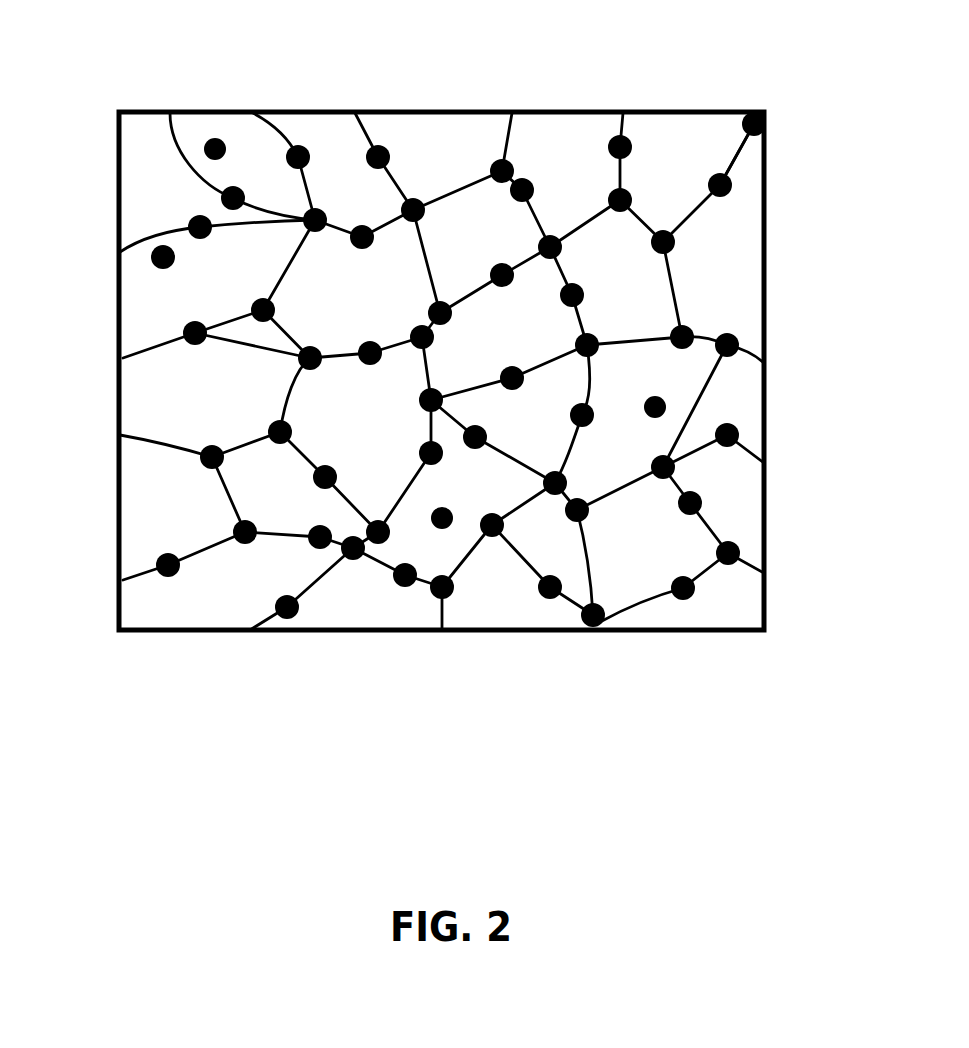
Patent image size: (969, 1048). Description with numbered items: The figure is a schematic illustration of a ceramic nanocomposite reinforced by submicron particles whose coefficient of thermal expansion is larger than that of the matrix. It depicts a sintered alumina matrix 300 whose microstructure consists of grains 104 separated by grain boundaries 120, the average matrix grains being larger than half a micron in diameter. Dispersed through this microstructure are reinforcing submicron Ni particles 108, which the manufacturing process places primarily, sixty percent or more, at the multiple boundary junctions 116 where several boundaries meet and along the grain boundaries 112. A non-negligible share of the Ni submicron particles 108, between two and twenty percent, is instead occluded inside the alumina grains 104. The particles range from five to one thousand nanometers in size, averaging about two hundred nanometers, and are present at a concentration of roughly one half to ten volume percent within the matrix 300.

The sintered alumina matrix 300 is at (523, 95).
The grains 104 is at (243, 137).
The submicron Ni particles 108 is at (153, 253).
The grain boundaries 112 is at (720, 197).
The multiple boundary junctions 116 is at (413, 200).
The grain boundaries 120 is at (730, 162).